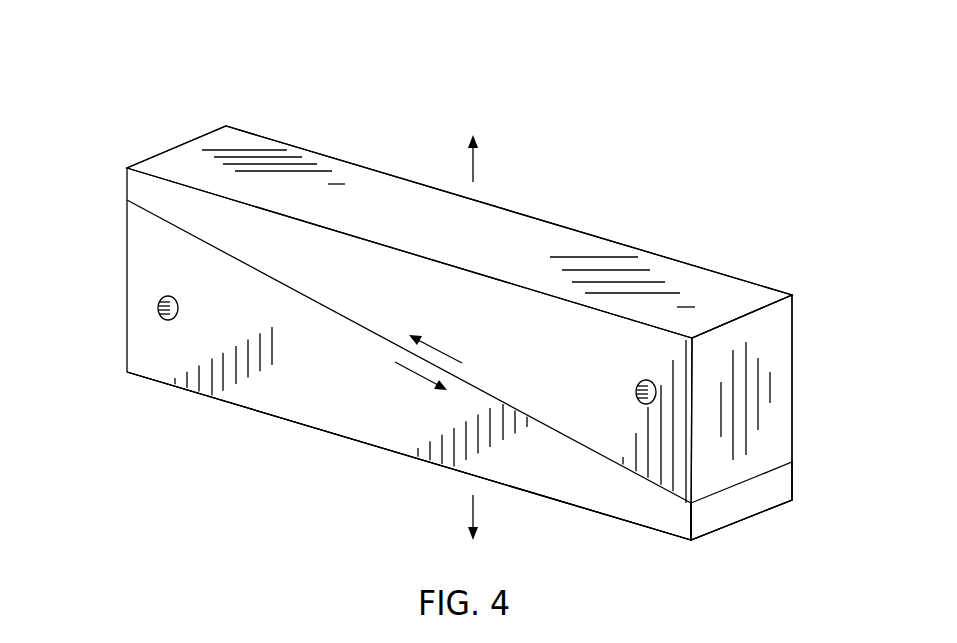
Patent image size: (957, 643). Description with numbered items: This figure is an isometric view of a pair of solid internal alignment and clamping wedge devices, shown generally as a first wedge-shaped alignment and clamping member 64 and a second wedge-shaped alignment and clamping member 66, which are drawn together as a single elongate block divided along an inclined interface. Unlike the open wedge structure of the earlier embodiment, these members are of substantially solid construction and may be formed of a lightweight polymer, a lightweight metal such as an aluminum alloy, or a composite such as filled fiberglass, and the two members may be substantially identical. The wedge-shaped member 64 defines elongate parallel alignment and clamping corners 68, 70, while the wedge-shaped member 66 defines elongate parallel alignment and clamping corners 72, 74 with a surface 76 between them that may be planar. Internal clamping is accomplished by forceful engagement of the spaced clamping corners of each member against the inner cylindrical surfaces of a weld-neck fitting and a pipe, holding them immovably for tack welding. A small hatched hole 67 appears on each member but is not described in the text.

The wedge-shaped alignment and clamping member 64 is at (226, 116).
The wedge-shaped alignment and clamping member 66 is at (610, 527).
The fastener hole 67 is at (158, 308).
The alignment and clamping corner 68 is at (400, 175).
The alignment and clamping corner 70 is at (363, 242).
The alignment and clamping corner 72 is at (665, 535).
The alignment and clamping corner 74 is at (792, 500).
The surface 76 is at (742, 523).